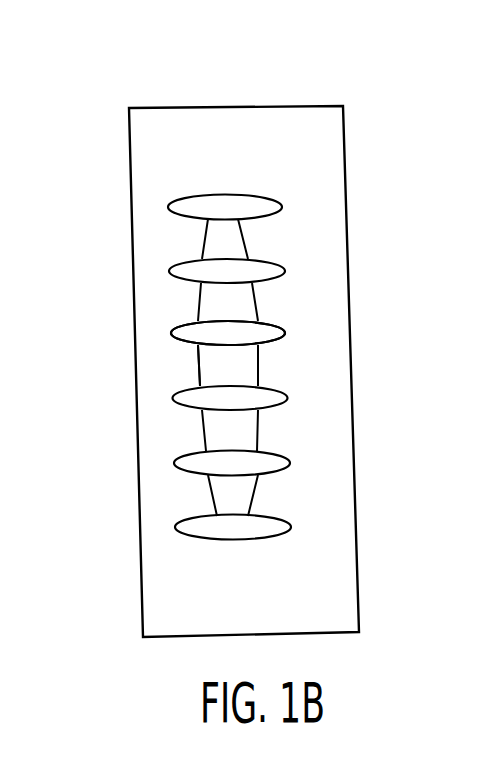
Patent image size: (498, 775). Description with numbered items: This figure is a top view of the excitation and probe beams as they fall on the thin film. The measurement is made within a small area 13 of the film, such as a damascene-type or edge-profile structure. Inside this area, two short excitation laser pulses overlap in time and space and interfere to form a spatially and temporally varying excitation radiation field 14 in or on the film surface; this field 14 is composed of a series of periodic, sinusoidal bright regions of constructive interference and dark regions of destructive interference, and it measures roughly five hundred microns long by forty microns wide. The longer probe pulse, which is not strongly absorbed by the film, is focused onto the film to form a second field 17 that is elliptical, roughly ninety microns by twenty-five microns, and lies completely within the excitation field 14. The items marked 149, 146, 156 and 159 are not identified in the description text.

The small area 13 is at (335, 167).
The excitation radiation field 14 is at (241, 364).
The second field 17 is at (210, 239).
The diffuser disc 149 is at (183, 333).
The spacer 146 is at (187, 376).
The width dimension 156 is at (145, 79).
The length dimension 159 is at (98, 205).